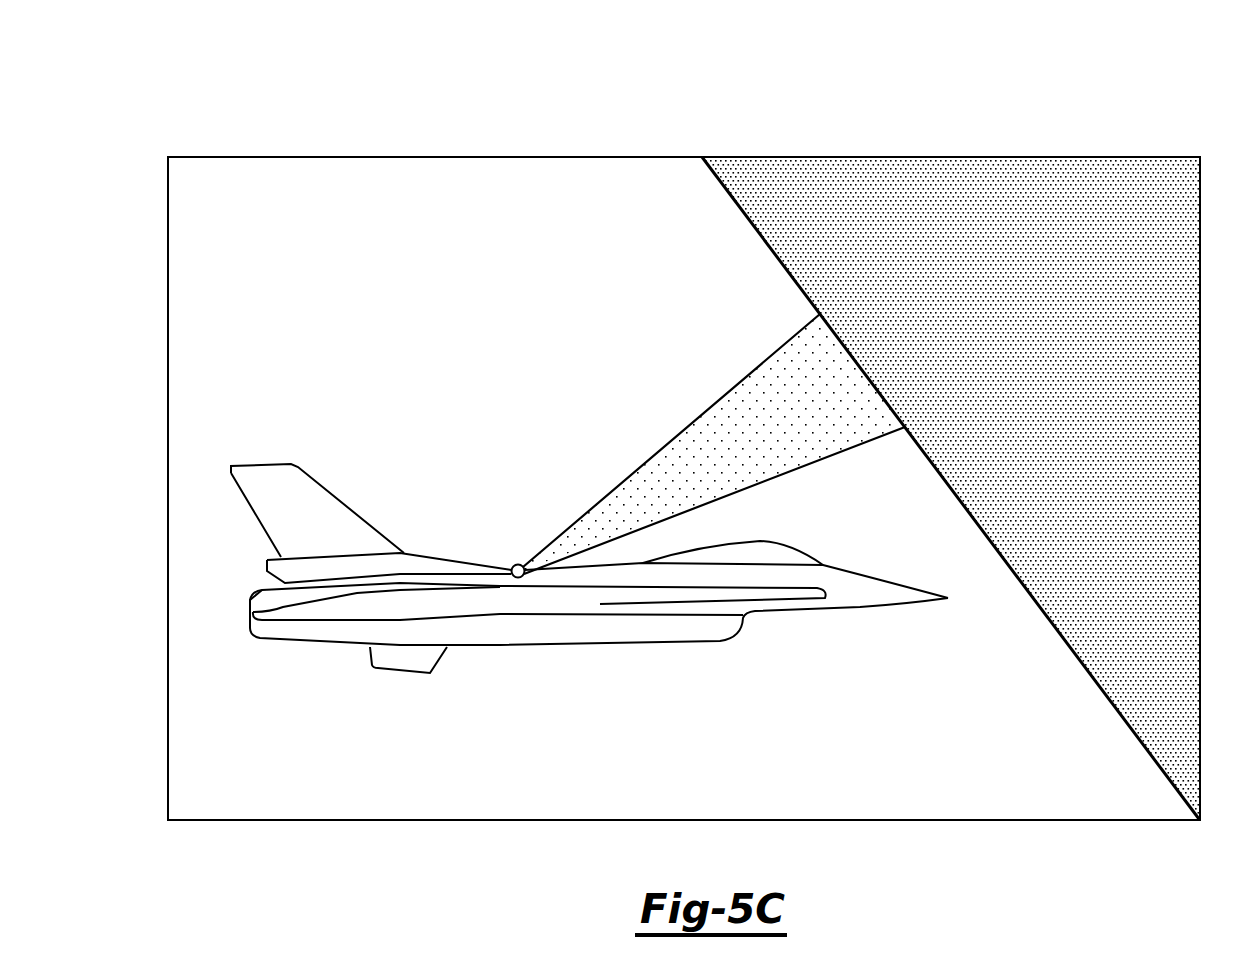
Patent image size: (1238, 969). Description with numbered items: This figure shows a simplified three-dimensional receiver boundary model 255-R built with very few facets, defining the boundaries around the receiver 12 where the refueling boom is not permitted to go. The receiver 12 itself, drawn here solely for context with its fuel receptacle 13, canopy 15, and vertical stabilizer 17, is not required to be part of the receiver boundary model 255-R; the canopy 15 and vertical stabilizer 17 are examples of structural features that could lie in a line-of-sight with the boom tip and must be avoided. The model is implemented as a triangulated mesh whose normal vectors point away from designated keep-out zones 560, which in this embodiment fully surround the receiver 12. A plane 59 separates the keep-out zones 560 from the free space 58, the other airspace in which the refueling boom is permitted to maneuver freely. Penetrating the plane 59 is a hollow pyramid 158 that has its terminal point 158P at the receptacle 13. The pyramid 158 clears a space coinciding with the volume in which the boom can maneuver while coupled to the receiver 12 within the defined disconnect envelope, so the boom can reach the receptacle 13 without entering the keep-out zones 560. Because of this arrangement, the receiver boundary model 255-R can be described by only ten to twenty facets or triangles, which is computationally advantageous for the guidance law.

The receiver boundary model 255-R is at (170, 103).
The keep-out zones 560 is at (385, 185).
The free space 58 is at (993, 182).
The plane 59 is at (741, 210).
The hollow pyramid 158 is at (738, 383).
The receiver 12 is at (589, 521).
The vertical stabilizer 17 is at (300, 500).
The terminal point 158P is at (518, 560).
The fuel receptacle 13 is at (510, 563).
The canopy 15 is at (772, 542).